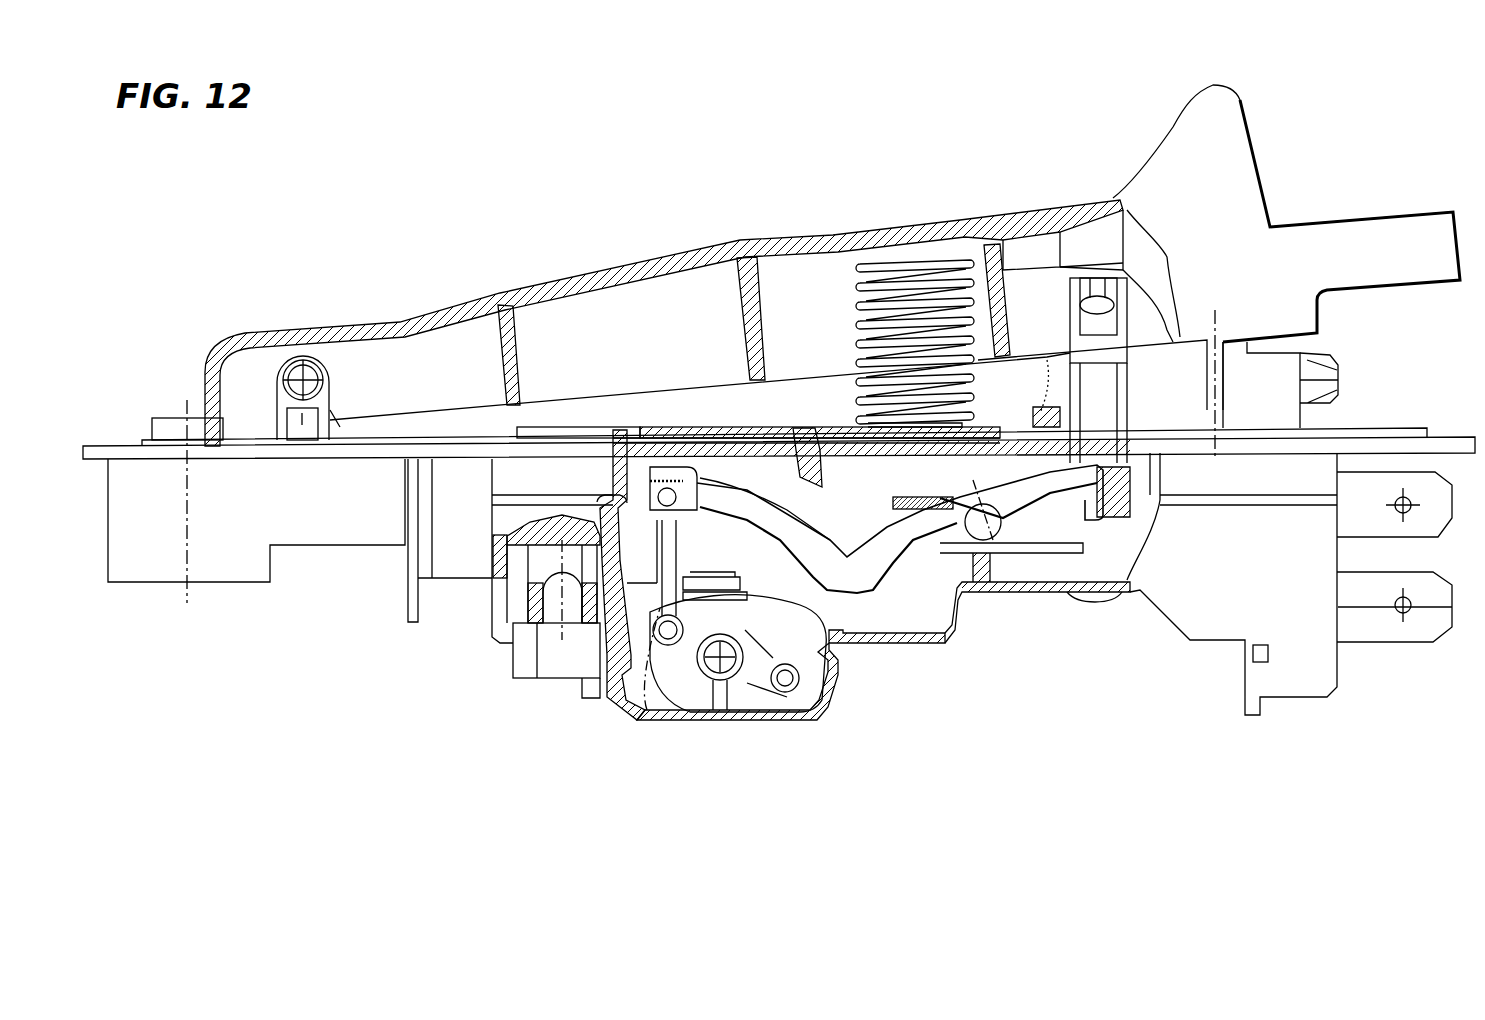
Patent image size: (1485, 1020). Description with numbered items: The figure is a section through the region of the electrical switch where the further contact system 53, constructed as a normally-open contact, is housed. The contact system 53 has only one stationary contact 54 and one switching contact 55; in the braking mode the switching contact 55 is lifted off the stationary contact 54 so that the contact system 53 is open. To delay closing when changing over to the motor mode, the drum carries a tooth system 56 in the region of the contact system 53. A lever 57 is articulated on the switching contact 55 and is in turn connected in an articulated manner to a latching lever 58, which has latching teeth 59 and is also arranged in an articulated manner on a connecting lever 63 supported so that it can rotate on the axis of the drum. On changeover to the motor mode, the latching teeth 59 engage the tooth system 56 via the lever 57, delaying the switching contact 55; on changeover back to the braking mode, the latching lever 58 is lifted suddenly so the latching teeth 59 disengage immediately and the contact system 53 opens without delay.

The further contact system 53 is at (772, 477).
The stationary contact 54 is at (821, 690).
The switching contact 55 is at (850, 650).
The tooth system 56 is at (685, 720).
The lever 57 is at (633, 722).
The latching lever 58 is at (644, 722).
The latching teeth 59 is at (797, 723).
The connecting lever 63 is at (747, 690).